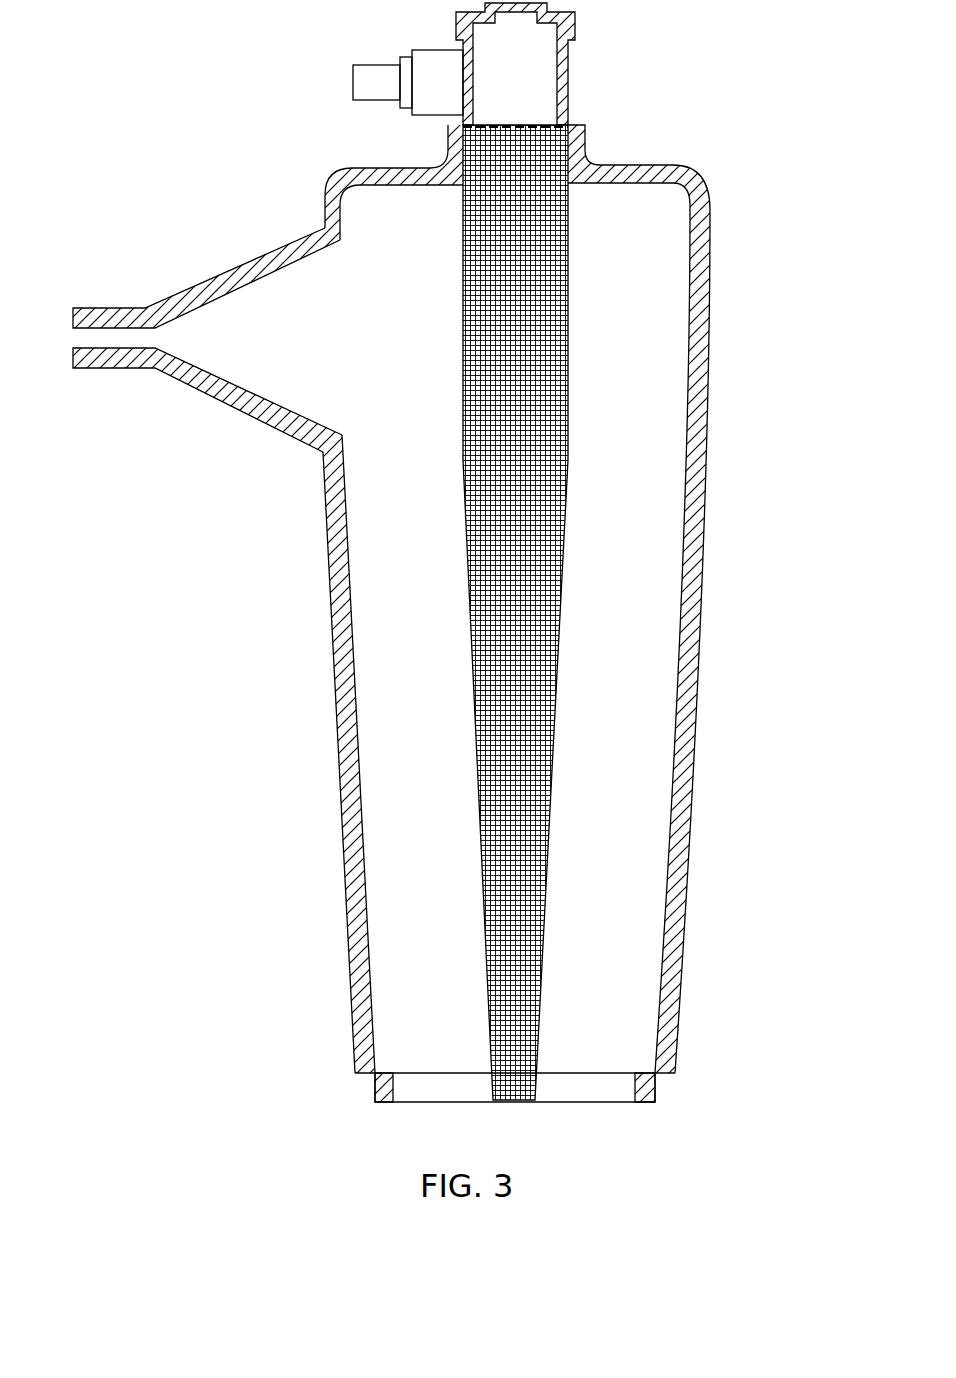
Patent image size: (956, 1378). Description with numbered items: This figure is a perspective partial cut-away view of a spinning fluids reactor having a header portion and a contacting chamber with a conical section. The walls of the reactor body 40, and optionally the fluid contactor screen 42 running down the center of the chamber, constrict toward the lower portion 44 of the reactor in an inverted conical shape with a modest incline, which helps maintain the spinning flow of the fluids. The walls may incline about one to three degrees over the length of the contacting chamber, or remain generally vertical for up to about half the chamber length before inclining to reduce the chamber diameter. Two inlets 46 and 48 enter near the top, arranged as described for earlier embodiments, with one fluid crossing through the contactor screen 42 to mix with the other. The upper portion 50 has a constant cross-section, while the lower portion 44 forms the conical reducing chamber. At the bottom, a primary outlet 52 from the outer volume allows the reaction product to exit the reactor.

The reactor body 40 is at (700, 576).
The fluid contactor screen 42 is at (558, 663).
The lower portion 44 is at (295, 450).
The inlet 46 is at (82, 308).
The inlet 48 is at (353, 72).
The upper portion 50 is at (737, 178).
The primary outlet 52 is at (598, 1100).